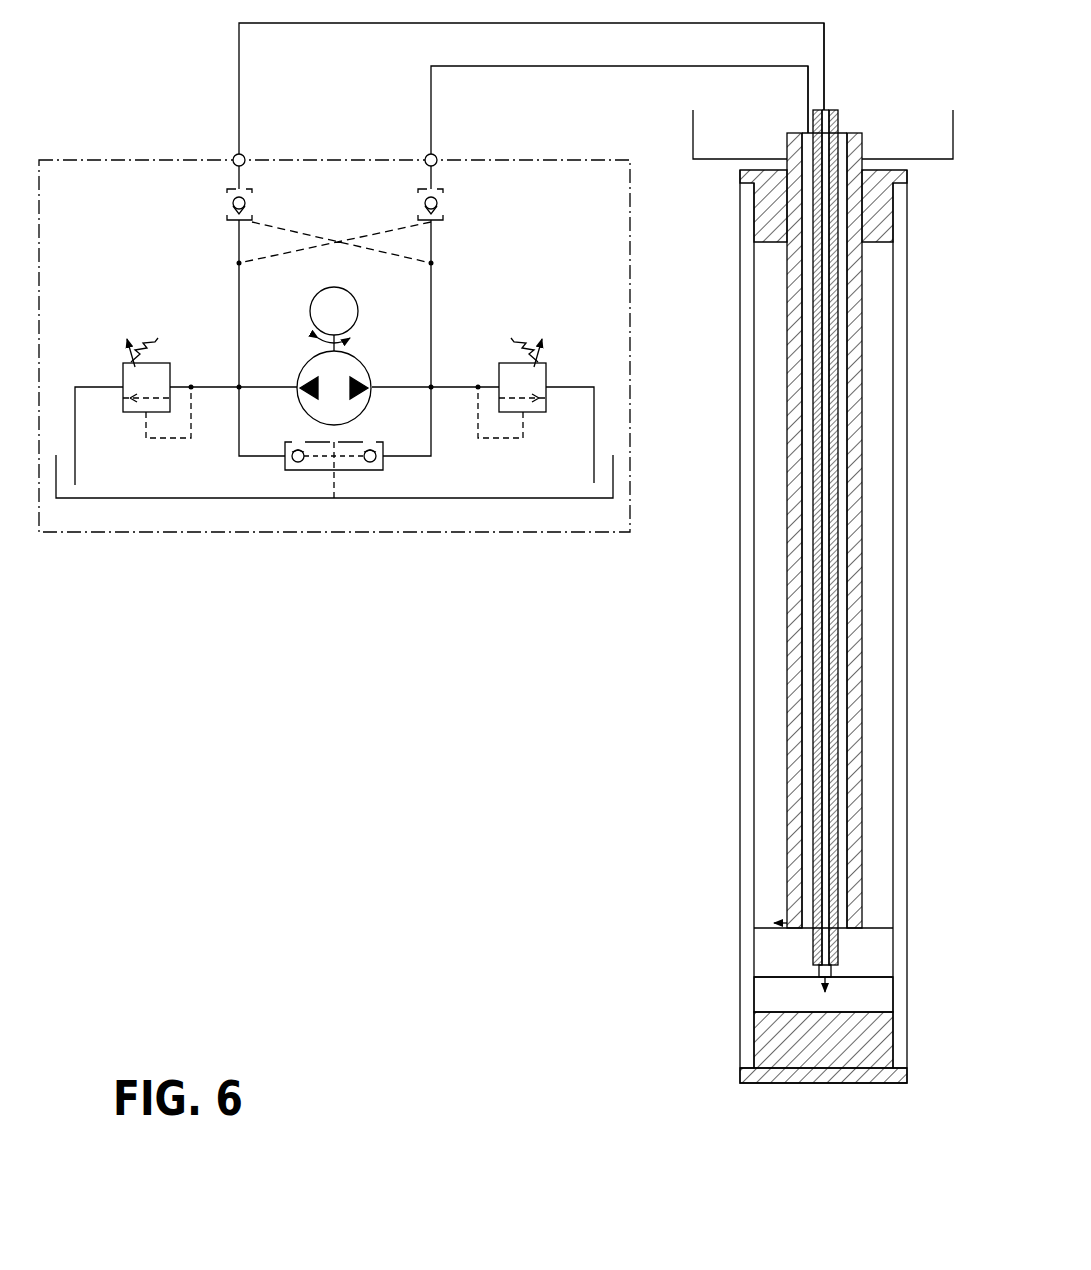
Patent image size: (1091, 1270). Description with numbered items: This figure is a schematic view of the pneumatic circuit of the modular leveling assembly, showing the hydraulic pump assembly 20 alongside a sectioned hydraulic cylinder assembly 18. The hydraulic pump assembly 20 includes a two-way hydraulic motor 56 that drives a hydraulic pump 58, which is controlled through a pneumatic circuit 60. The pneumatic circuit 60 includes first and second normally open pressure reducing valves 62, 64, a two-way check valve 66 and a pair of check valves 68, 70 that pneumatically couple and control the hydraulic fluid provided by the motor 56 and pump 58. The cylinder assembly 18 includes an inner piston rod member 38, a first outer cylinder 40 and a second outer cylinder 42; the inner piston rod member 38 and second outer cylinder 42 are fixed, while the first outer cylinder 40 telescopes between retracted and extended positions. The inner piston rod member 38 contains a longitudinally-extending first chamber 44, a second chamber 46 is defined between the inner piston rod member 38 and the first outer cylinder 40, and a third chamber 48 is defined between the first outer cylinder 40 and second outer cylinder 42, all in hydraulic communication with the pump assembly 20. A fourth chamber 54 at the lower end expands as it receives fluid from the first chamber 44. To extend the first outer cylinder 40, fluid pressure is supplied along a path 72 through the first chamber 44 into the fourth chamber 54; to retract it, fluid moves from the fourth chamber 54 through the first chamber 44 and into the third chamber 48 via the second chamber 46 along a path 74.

The hydraulic cylinder assembly 18 is at (787, 553).
The hydraulic pump assembly 20 is at (176, 104).
The inner piston rod member 38 is at (820, 572).
The first outer cylinder 40 is at (788, 660).
The second outer cylinder 42 is at (742, 770).
The first chamber 44 is at (822, 607).
The second chamber 46 is at (802, 703).
The third chamber 48 is at (765, 810).
The fourth chamber 54 is at (775, 990).
The two-way hydraulic motor 56 is at (357, 318).
The hydraulic pump 58 is at (355, 410).
The pneumatic circuit 60 is at (632, 280).
The first pressure reducing valve 62 is at (168, 375).
The second pressure reducing valve 64 is at (546, 378).
The two-way check valve 66 is at (360, 472).
The check valve 68 is at (227, 205).
The check valve 70 is at (443, 203).
The path 72 is at (822, 320).
The path 74 is at (806, 374).